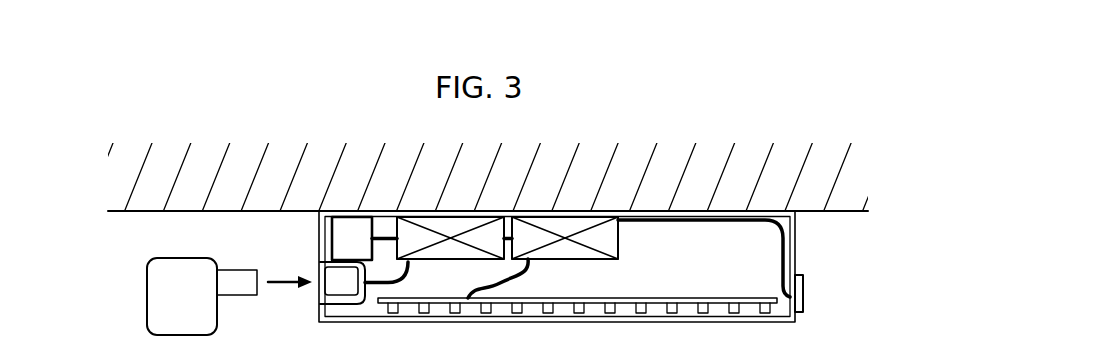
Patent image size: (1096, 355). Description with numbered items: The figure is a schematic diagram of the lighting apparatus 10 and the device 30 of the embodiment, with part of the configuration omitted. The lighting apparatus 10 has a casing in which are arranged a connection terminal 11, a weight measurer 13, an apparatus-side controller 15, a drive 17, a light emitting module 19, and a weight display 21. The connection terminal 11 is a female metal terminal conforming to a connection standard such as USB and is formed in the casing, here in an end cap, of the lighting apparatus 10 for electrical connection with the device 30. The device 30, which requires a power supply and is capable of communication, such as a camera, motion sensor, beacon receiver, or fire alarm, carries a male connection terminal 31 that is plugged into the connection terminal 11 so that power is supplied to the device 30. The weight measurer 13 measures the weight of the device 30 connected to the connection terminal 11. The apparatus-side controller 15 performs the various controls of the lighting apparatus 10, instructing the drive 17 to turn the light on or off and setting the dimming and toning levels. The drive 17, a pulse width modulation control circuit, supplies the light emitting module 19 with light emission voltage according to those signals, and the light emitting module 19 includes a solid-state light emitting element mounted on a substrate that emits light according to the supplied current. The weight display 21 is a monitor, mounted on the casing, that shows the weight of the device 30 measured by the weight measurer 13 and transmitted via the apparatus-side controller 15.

The lighting apparatus 10 is at (798, 257).
The connection terminal 11 is at (320, 286).
The weight measurer 13 is at (343, 237).
The apparatus-side controller 15 is at (422, 255).
The drive 17 is at (614, 236).
The light emitting module 19 is at (692, 292).
The weight display 21 is at (803, 290).
The device 30 is at (219, 259).
The connection terminal 31 is at (240, 291).